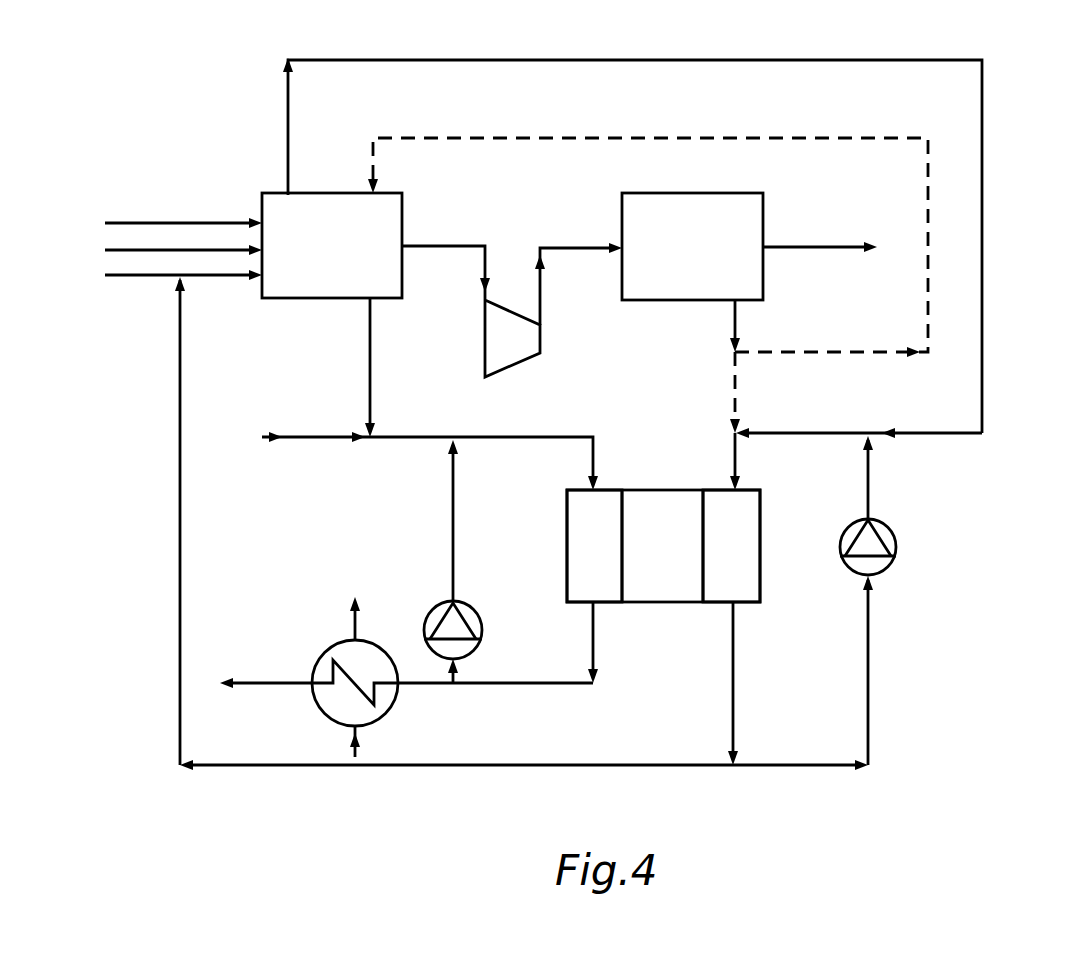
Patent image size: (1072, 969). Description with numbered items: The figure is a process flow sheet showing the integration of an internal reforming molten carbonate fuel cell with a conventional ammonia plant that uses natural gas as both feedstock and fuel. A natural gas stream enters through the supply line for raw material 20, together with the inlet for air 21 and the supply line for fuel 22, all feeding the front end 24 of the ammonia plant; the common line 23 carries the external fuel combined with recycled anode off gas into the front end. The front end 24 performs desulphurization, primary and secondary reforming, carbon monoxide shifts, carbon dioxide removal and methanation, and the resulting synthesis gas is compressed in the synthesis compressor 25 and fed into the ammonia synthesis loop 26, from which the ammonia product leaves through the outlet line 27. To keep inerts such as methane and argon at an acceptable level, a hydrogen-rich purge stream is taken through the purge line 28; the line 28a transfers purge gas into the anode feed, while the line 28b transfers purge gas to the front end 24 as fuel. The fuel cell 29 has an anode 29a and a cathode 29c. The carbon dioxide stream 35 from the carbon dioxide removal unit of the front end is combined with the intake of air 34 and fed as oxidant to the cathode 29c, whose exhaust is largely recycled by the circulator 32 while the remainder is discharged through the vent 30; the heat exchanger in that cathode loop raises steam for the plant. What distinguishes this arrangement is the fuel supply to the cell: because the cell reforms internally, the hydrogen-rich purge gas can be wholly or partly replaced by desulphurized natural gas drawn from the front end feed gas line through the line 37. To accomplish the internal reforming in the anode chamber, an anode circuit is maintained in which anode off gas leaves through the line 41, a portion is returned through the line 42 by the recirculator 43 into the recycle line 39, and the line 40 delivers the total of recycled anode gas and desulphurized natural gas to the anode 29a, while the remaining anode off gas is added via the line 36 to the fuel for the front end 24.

The supply line for raw material 20 is at (209, 220).
The inlet for air 21 is at (155, 252).
The supply line for fuel 22 is at (154, 282).
The common line for fuel from outside and recycled anode off gas 23 is at (222, 280).
The front end of an ammonia plant 24 is at (358, 263).
The synthesis compressor 25 is at (508, 365).
The ammonia synthesis loop 26 is at (704, 270).
The outlet line for ammonia produced 27 is at (836, 232).
The purge line from the loop 28 is at (725, 322).
The line for transferring hydrogen purge gas from the loop into the anode feed line 28a is at (728, 392).
The line for transferring hydrogen purge gas from the loop to the front end as fuel 28b is at (838, 335).
The fuel cell 29 is at (652, 600).
The anode 29a is at (740, 565).
The cathode 29c is at (596, 565).
The vent for net cathode off gas 30 is at (282, 670).
The circulator 32 is at (482, 639).
The intake of air 34 is at (312, 418).
The carbon dioxide stream from the front end 35 is at (372, 388).
The line for anode off gas from the fuel cell to the front end 36 is at (548, 742).
The line for transferring a stream of desulphurized natural gas to the anode loop 37 is at (286, 130).
The recycle line for anode off gas 39 is at (870, 474).
The line for the total of recycled anode gas and desulphurized natural gas 40 is at (838, 422).
The line for anode off gas 41 is at (737, 694).
The line for anode off gas to be recycled 42 is at (872, 694).
The recirculator 43 is at (896, 556).